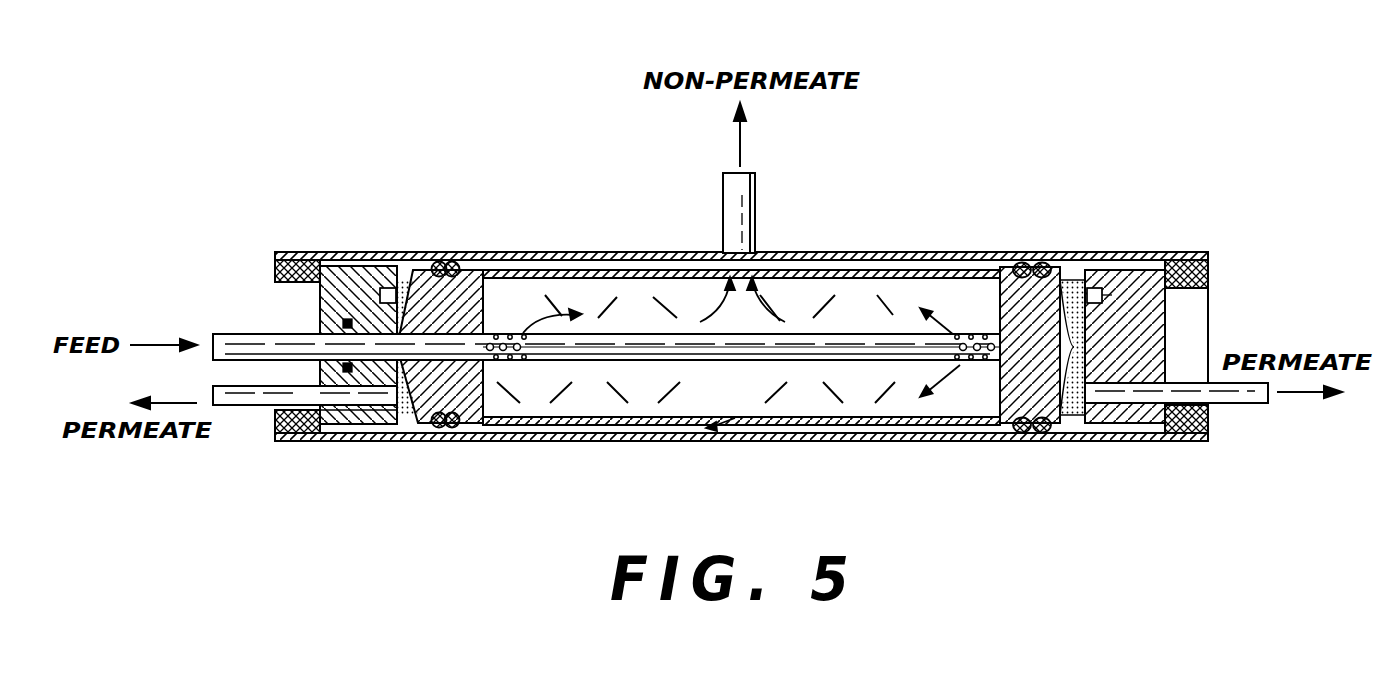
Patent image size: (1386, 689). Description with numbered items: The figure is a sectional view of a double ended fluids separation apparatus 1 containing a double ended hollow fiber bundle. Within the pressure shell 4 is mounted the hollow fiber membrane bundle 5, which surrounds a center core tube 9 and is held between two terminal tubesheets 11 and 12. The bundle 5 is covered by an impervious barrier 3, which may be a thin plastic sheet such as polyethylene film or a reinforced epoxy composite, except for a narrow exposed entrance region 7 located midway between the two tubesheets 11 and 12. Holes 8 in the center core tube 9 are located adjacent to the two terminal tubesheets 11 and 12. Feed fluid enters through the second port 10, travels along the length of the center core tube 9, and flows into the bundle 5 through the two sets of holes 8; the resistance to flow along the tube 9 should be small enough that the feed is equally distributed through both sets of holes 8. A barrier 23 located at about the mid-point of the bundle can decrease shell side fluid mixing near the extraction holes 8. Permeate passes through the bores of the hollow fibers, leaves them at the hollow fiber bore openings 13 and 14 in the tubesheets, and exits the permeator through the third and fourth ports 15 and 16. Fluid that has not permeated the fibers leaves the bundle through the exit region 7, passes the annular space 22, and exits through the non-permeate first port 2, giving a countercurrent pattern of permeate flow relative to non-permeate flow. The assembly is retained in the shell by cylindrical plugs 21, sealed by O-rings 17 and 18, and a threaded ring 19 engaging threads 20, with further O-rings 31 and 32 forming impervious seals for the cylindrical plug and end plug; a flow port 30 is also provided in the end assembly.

The double ended fluids separation apparatus 1 is at (654, 447).
The first port 2 is at (757, 236).
The impermeable barrier 3 is at (852, 253).
The pressure shell 4 is at (928, 253).
The hollow fiber membrane bundle 5 is at (868, 300).
The entrance region 7 is at (752, 400).
The holes 8 is at (500, 335).
The center core tube 9 is at (523, 363).
The second port 10 is at (281, 254).
The tubesheet 11 is at (493, 440).
The tubesheet 12 is at (1015, 397).
The hollow fiber bore opening 13 is at (430, 433).
The hollow fiber bore opening 14 is at (1078, 420).
The third port 15 is at (232, 408).
The fourth port 16 is at (1255, 413).
The O-ring 17 is at (1040, 266).
The O-ring 18 is at (441, 256).
The threaded ring 19 is at (1213, 287).
The threads 20 is at (1208, 253).
The cylindrical plug 21 is at (321, 253).
The annular space 22 is at (578, 270).
The barrier 23 is at (737, 395).
The flow port 30 is at (375, 255).
The O-ring 31 is at (353, 430).
The O-ring 32 is at (378, 440).